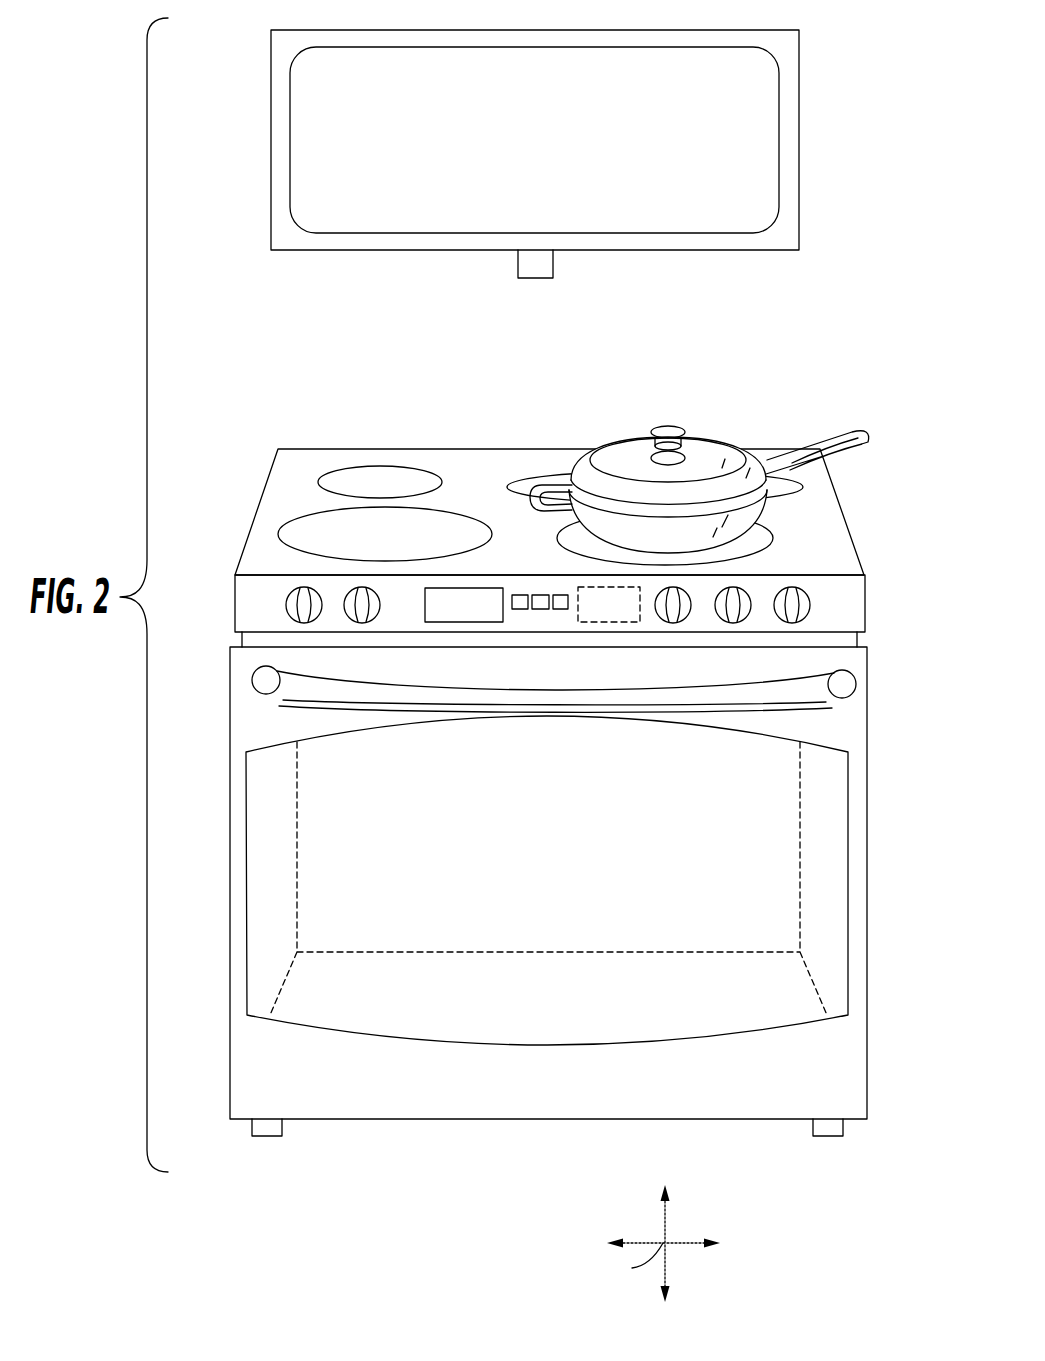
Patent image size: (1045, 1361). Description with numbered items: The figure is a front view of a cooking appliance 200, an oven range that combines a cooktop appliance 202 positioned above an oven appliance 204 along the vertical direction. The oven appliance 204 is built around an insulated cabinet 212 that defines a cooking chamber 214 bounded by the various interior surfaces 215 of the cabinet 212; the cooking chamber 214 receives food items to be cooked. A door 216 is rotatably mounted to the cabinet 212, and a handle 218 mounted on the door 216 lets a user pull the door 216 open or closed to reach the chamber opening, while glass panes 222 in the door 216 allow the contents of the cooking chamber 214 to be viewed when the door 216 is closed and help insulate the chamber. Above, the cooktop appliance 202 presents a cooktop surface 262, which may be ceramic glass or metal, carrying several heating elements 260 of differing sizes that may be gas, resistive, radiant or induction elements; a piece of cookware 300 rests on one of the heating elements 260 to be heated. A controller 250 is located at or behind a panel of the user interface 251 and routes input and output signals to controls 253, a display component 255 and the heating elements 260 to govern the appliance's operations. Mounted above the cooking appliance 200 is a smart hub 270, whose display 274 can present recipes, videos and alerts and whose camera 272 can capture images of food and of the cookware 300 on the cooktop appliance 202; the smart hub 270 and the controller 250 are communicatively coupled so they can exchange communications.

The cooking appliance 200 is at (850, 403).
The cooktop appliance 202 is at (268, 473).
The oven appliance 204 is at (223, 970).
The insulated cabinet 212 is at (257, 637).
The cooking chamber 214 is at (740, 881).
The interior surfaces 215 is at (393, 1012).
The door 216 is at (843, 665).
The handle 218 is at (285, 693).
The glass panes 222 is at (823, 768).
The controller 250 is at (622, 622).
The user interface 251 is at (540, 627).
The controls 253 is at (811, 603).
The display component 255 is at (472, 598).
The heating elements 260 is at (523, 482).
The cooktop surface 262 is at (810, 513).
The smart hub 270 is at (799, 82).
The camera 272 is at (553, 259).
The display 274 is at (732, 172).
The cookware 300 is at (697, 428).